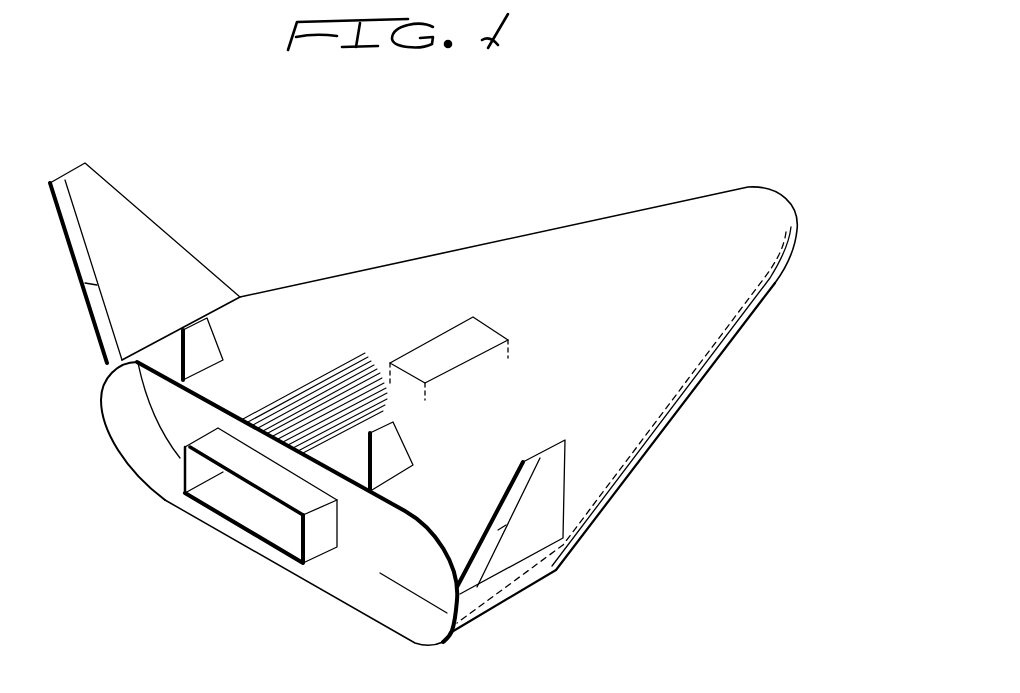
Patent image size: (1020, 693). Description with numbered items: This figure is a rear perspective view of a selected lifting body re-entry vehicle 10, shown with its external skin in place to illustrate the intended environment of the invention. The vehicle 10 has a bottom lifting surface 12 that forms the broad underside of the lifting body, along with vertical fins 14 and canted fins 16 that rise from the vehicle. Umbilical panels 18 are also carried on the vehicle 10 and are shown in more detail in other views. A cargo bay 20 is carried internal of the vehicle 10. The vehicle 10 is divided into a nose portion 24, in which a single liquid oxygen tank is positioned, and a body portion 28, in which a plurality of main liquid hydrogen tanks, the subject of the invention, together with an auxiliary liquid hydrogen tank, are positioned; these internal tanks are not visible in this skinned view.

The re-entry vehicle 10 is at (476, 369).
The bottom lifting surface 12 is at (512, 410).
The vertical fins 14 is at (207, 340).
The canted fins 16 is at (177, 252).
The umbilical panels 18 is at (282, 555).
The cargo bay 20 is at (455, 330).
The nose portion 24 is at (764, 297).
The body portion 28 is at (580, 571).